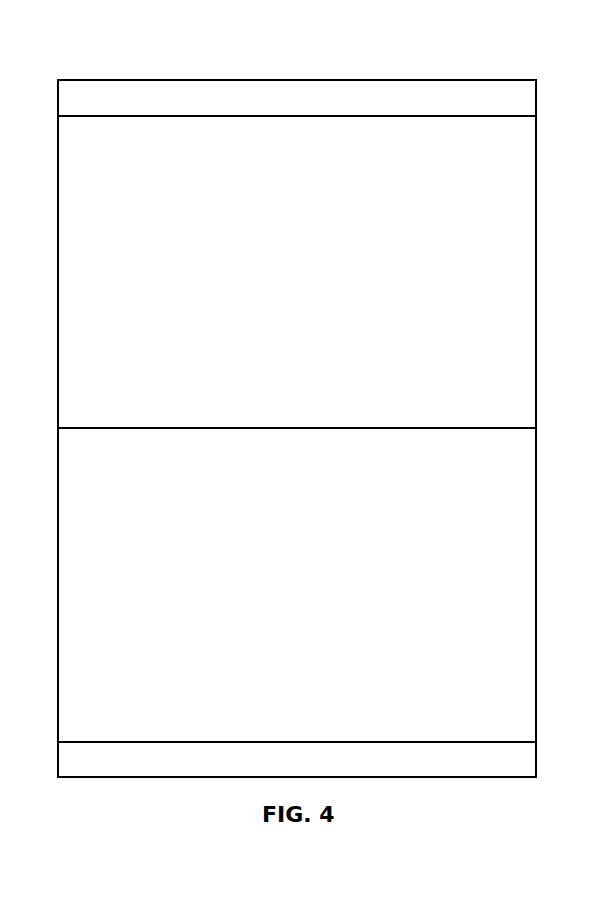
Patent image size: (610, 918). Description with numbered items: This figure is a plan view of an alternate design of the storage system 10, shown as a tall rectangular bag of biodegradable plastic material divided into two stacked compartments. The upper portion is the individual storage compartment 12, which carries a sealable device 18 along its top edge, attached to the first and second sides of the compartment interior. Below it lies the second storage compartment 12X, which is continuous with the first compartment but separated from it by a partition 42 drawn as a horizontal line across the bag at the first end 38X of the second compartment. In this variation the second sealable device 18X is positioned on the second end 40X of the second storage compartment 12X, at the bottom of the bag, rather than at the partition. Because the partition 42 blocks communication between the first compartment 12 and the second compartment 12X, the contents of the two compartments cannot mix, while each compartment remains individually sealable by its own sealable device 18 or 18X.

The storage system 10 is at (128, 61).
The sealable device 18 is at (497, 93).
The individual storage compartment 12 is at (537, 214).
The partition 42 is at (73, 428).
The first end 38X is at (540, 428).
The second storage compartment 12X is at (537, 592).
The second end 40X is at (540, 758).
The second sealable device 18X is at (463, 766).